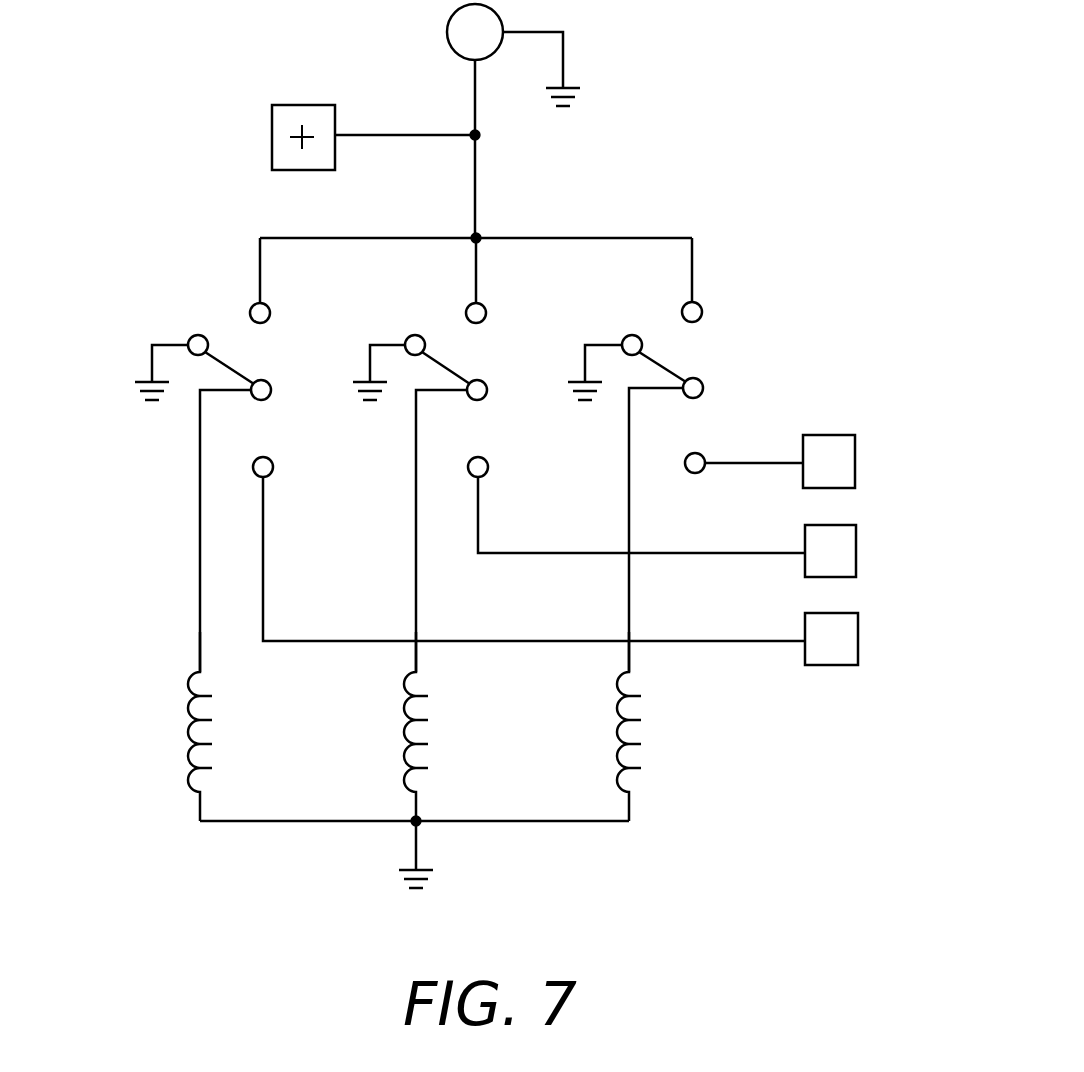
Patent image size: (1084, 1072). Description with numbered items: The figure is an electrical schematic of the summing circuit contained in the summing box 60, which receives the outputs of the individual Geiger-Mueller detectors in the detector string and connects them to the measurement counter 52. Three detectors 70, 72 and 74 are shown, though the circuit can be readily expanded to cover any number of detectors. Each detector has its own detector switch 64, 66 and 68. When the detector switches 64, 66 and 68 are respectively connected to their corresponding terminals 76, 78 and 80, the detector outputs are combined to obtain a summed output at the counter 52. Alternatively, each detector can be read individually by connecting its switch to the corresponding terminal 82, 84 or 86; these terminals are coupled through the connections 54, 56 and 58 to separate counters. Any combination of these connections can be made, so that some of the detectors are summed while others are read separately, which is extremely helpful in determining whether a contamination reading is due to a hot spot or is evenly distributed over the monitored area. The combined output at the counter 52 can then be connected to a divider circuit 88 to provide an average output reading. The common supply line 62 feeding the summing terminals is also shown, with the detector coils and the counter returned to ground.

The counter 52 is at (447, 40).
The connection 54 is at (833, 435).
The connection 56 is at (805, 565).
The connection 58 is at (838, 667).
The summing box 60 is at (712, 199).
The supply bus 62 is at (533, 238).
The detector switch 64 is at (295, 370).
The detector switch 66 is at (490, 388).
The detector switch 68 is at (706, 386).
The detector 70 is at (190, 727).
The detector 72 is at (400, 730).
The detector 74 is at (612, 735).
The terminal 76 is at (272, 312).
The terminal 78 is at (489, 312).
The terminal 80 is at (704, 312).
The terminal 82 is at (275, 470).
The terminal 84 is at (490, 470).
The terminal 86 is at (704, 455).
The divider circuit 88 is at (300, 105).